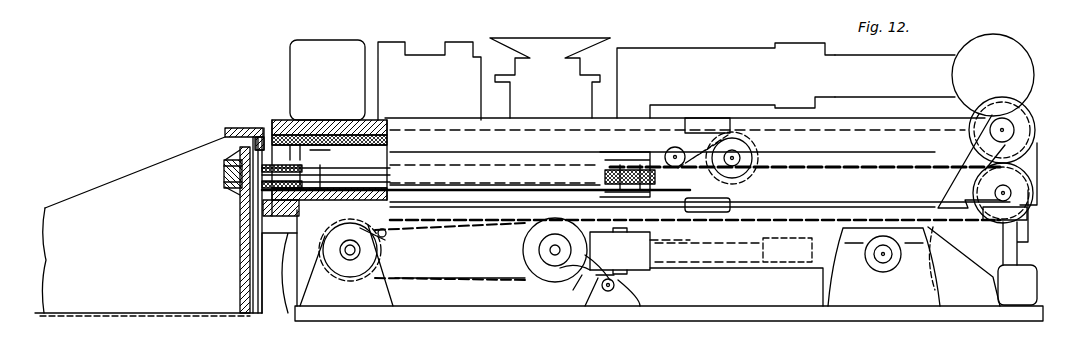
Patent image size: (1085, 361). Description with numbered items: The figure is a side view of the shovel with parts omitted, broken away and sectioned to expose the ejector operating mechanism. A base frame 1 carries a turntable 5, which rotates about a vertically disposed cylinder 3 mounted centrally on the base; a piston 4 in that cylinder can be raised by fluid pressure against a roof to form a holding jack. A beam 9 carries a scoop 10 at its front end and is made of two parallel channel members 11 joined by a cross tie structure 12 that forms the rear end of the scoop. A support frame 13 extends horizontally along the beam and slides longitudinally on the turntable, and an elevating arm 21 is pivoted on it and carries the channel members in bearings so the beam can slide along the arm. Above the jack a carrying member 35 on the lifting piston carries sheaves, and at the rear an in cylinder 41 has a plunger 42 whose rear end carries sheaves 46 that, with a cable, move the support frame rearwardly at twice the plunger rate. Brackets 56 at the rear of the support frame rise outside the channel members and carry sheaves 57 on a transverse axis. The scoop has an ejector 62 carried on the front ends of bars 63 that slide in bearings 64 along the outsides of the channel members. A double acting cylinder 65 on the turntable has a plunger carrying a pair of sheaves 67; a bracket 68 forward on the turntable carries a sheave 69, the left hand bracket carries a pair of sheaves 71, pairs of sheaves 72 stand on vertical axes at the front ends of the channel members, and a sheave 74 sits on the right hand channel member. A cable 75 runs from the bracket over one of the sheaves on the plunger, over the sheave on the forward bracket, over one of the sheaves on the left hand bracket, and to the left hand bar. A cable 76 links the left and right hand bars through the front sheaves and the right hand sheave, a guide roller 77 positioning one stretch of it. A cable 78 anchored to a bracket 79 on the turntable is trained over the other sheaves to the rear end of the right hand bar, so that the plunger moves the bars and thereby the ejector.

The base frame 1 is at (856, 318).
The cylinder 3 is at (594, 118).
The piston 4 is at (568, 60).
The turntable 5 is at (796, 323).
The beam 9 is at (870, 207).
The scoop 10 is at (152, 161).
The channel members 11 is at (835, 197).
The cross tie structure 12 is at (255, 126).
The support frame 13 is at (300, 80).
The elevating arm 21 is at (274, 121).
The carrying member 35 is at (438, 56).
The in cylinder 41 is at (726, 80).
The plunger 42 is at (895, 76).
The sheaves 46 is at (993, 75).
The brackets 56 is at (1015, 151).
The sheaves 57 is at (1036, 127).
The ejector 62 is at (228, 186).
The bars 63 is at (500, 177).
The bearings 64 is at (424, 190).
The cylinder 65 is at (725, 258).
The sheaves 67 is at (520, 262).
The bracket 68 is at (388, 290).
The sheave 69 is at (387, 257).
The sheaves 71 is at (1033, 212).
The sheaves 72 is at (236, 163).
The sheave 74 is at (760, 158).
The cable 75 is at (473, 280).
The cable 76 is at (327, 222).
The guide roller 77 is at (670, 150).
The cable 78 is at (363, 165).
The bracket 79 is at (641, 300).